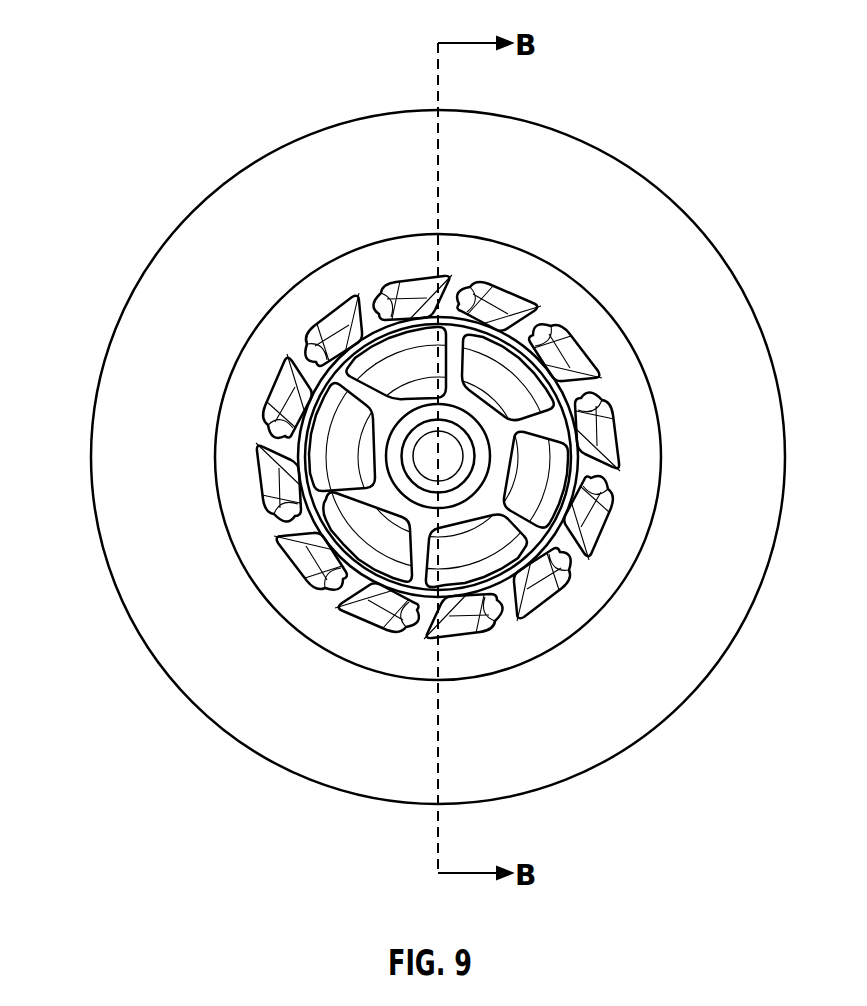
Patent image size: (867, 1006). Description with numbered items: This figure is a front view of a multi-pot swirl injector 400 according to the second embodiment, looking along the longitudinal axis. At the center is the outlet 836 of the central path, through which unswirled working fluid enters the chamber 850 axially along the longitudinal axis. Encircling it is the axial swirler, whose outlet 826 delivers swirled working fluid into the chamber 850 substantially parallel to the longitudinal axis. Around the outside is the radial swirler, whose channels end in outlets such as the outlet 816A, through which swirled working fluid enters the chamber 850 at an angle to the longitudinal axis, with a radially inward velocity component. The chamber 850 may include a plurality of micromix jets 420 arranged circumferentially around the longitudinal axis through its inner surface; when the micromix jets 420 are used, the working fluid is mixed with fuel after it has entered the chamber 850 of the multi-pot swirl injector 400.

The multi-pot swirl injector 400 is at (150, 116).
The micromix jets 420 is at (232, 495).
The outlet of axial swirler 826 is at (393, 348).
The outlet of central path 836 is at (423, 453).
The outlet of radial swirler channel 816A is at (577, 355).
The chamber 850 is at (597, 573).